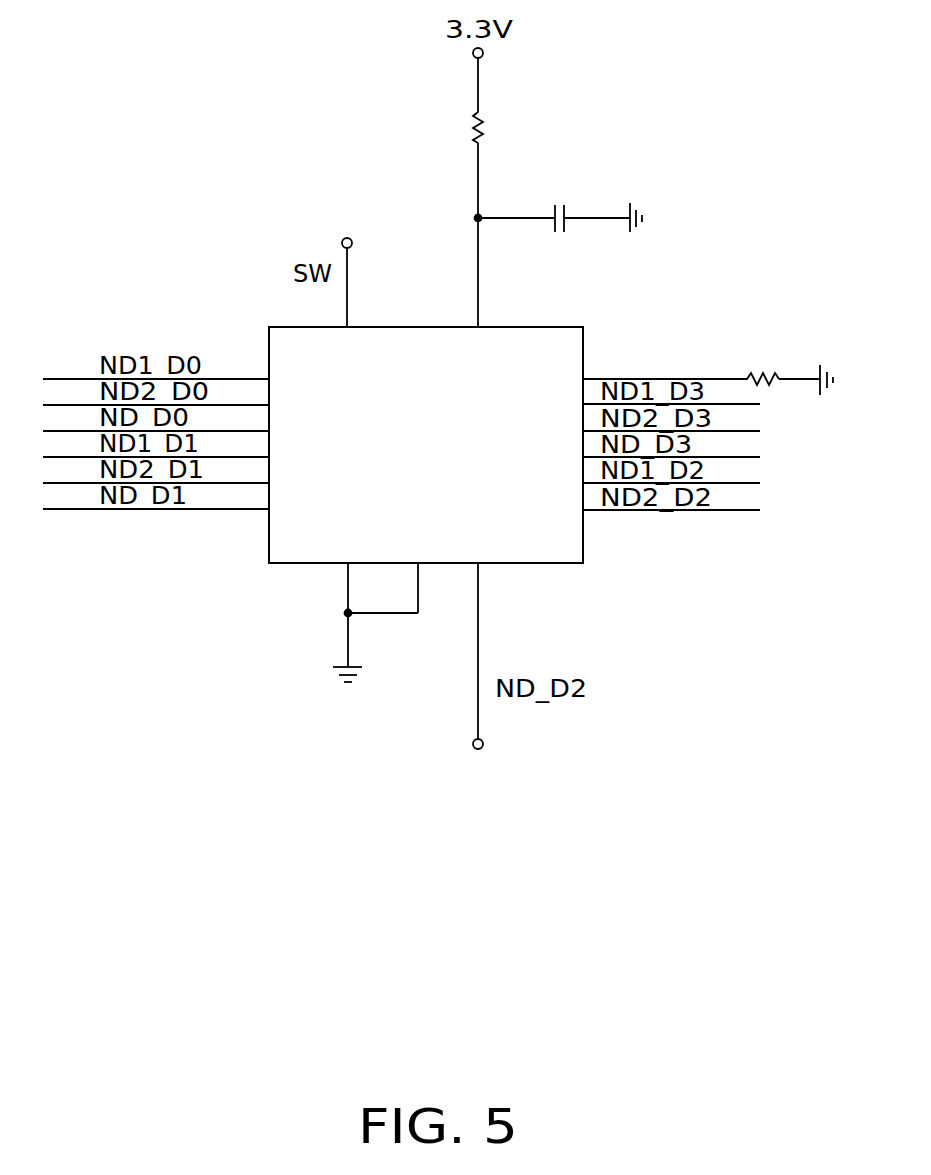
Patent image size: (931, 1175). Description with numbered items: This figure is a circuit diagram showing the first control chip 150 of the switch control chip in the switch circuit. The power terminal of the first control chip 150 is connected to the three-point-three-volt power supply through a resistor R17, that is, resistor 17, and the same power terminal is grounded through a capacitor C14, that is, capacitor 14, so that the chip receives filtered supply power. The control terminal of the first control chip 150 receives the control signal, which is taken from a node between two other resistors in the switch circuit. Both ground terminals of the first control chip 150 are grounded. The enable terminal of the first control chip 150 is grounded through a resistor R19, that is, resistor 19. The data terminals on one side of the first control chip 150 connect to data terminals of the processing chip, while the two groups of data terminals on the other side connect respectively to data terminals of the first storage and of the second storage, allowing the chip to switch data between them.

The first control chip 150 is at (555, 563).
The resistor R17 is at (507, 125).
The capacitor C14 is at (563, 201).
The resistor R19 is at (758, 362).
The resistor R17 17 is at (507, 125).
The capacitor C14 14 is at (563, 201).
The resistor R19 19 is at (758, 362).